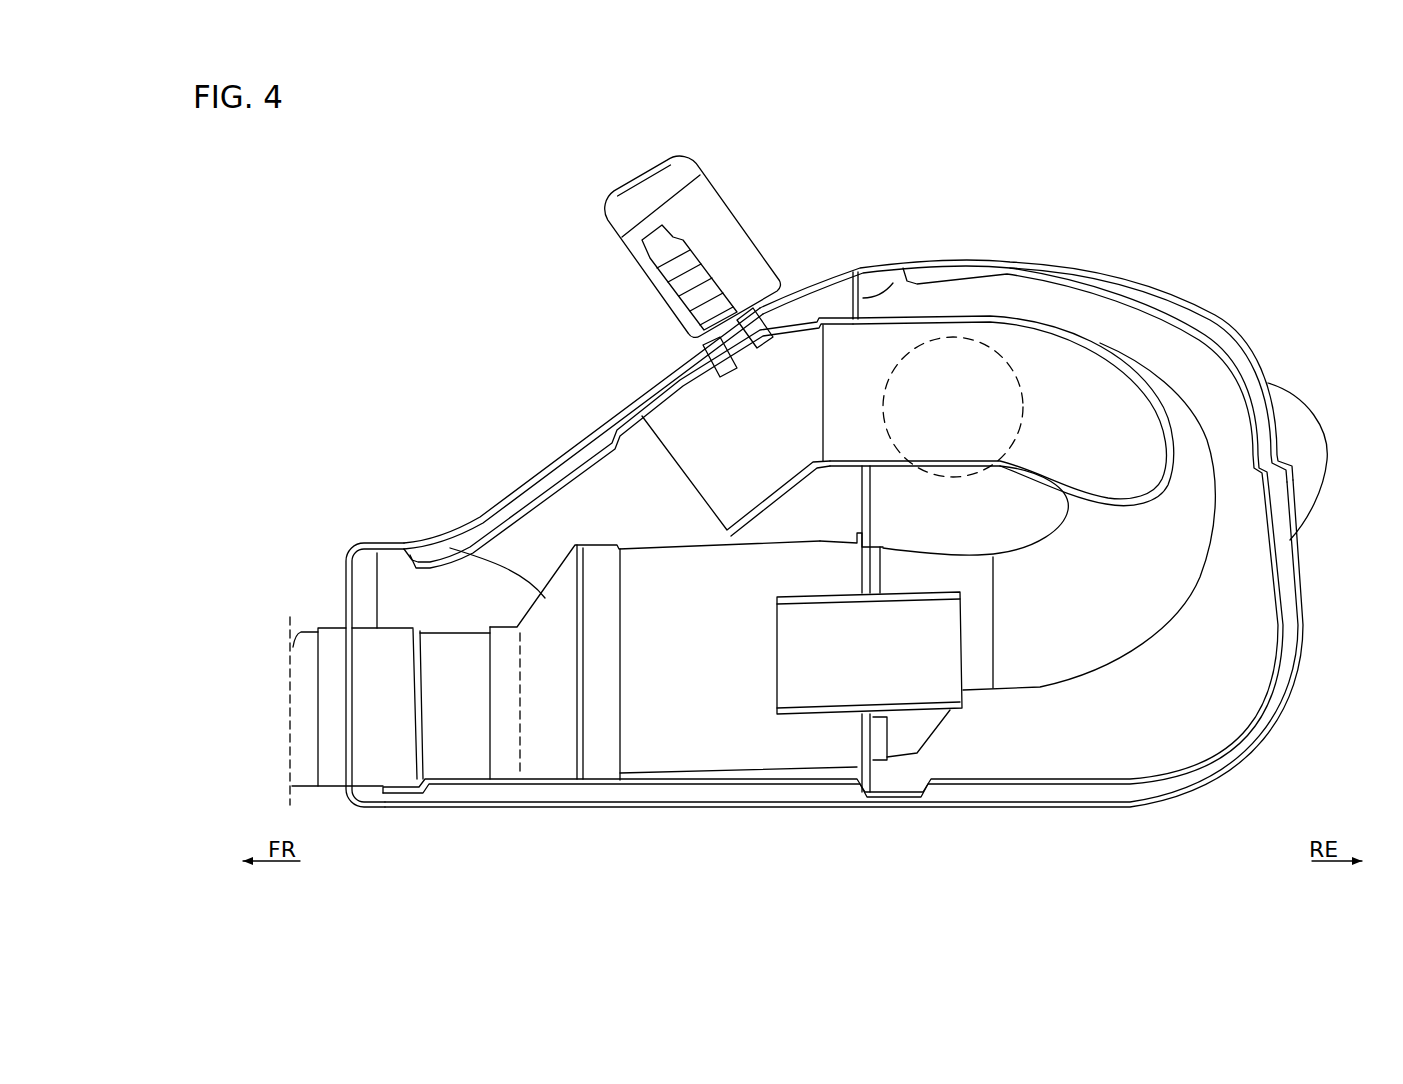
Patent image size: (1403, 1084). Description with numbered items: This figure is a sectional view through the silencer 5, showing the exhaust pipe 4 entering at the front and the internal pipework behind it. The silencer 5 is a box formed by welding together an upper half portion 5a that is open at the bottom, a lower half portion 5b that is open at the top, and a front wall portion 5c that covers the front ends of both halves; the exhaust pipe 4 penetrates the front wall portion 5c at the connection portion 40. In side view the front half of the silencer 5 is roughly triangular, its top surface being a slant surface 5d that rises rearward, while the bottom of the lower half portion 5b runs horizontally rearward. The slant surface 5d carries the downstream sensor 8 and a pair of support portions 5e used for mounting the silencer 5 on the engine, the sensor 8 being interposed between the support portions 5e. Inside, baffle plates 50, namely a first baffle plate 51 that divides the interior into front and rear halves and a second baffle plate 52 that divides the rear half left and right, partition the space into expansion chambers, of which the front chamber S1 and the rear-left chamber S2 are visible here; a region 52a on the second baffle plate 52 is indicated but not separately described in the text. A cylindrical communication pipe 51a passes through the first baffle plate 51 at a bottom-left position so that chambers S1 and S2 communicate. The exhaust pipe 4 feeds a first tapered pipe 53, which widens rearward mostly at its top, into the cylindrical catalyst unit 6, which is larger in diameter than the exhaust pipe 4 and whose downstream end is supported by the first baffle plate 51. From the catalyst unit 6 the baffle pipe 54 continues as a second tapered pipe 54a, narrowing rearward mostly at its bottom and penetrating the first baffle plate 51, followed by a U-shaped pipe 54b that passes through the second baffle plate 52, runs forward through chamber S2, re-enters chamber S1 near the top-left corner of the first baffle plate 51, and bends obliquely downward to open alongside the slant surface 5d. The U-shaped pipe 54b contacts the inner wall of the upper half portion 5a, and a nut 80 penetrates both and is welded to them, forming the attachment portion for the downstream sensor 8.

The exhaust pipe 4 is at (292, 726).
The silencer 5 is at (1263, 330).
The upper half portion 5a is at (1133, 278).
The lower half portion 5b is at (1302, 571).
The front wall portion 5c is at (346, 588).
The slant surface 5d is at (561, 456).
The support portions 5e is at (644, 187).
The catalyst unit 6 is at (721, 761).
The downstream sensor 8 is at (683, 250).
The nut 80 is at (748, 312).
The connection portion 40 is at (332, 778).
The baffle plates 50 is at (993, 214).
The first baffle plate 51 is at (893, 283).
The communication pipe 51a is at (820, 694).
The second baffle plate 52 is at (947, 300).
The opening 52a is at (993, 345).
The first tapered pipe 53 is at (450, 548).
The baffle pipe 54 is at (1067, 838).
The second tapered pipe 54a is at (917, 735).
The U-shaped pipe 54b is at (1037, 673).
The expansion chamber S1 is at (528, 537).
The expansion chamber S2 is at (1222, 733).